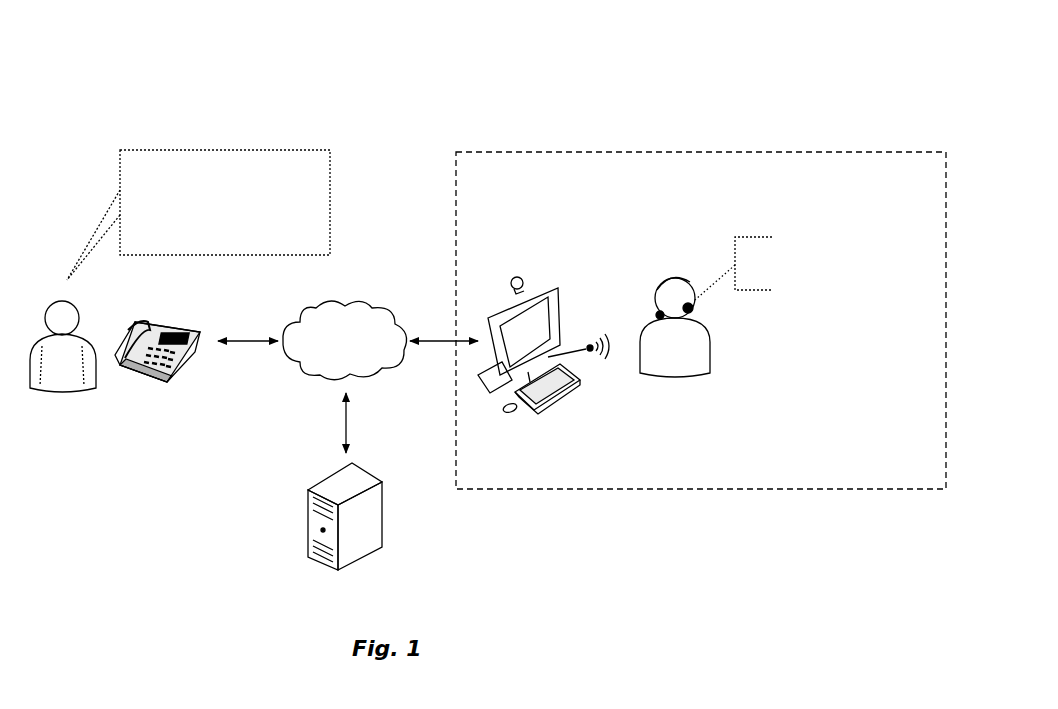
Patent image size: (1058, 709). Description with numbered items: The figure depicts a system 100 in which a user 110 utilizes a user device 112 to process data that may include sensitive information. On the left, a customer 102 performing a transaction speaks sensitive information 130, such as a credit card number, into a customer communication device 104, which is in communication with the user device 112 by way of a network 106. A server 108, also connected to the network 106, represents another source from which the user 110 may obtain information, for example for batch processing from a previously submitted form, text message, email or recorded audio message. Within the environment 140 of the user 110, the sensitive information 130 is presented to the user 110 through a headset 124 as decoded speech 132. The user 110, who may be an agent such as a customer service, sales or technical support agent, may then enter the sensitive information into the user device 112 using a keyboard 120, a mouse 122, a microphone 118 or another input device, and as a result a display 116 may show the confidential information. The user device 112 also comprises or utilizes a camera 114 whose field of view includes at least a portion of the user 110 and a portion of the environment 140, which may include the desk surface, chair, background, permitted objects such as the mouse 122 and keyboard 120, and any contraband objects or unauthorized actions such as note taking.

The system 100 is at (862, 50).
The customer 102 is at (83, 330).
The customer communication device 104 is at (178, 382).
The network 106 is at (380, 308).
The server 108 is at (381, 518).
The user 110 is at (713, 345).
The user device 112 is at (605, 220).
The camera 114 is at (522, 277).
The display 116 is at (560, 303).
The microphone 118 is at (584, 352).
The keyboard 120 is at (548, 400).
The mouse 122 is at (515, 414).
The headset 124 is at (694, 308).
The sensitive information 130 is at (240, 150).
The decoded speech 132 is at (820, 222).
The environment 140 is at (692, 490).